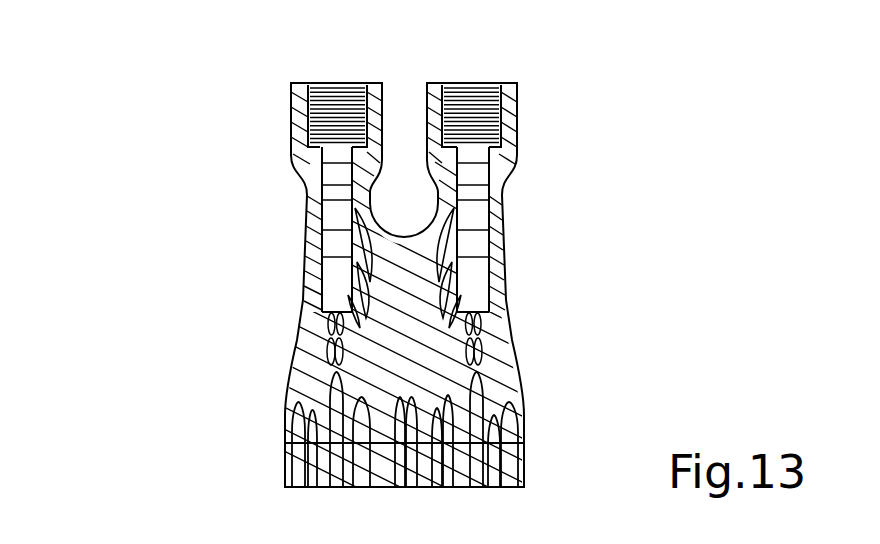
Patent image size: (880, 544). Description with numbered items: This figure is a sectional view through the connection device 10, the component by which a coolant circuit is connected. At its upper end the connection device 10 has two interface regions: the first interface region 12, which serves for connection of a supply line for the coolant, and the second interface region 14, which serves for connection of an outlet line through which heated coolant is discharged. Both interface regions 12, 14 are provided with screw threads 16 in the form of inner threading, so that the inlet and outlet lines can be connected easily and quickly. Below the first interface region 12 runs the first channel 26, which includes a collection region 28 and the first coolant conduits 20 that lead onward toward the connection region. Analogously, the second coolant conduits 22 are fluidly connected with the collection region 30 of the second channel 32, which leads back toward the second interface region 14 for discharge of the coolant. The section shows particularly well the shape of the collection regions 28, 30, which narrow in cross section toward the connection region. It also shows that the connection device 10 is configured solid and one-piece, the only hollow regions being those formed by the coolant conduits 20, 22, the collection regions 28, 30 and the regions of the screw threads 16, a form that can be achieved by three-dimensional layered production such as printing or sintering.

The connection device 10 is at (155, 94).
The first interface region 12 is at (290, 135).
The second interface region 14 is at (522, 141).
The screw threads 16 is at (342, 96).
The first coolant conduits 20 is at (313, 397).
The second coolant conduits 22 is at (485, 397).
The first channel 26 is at (314, 205).
The collection region 28 is at (333, 245).
The collection region 30 is at (485, 268).
The second channel 32 is at (491, 212).